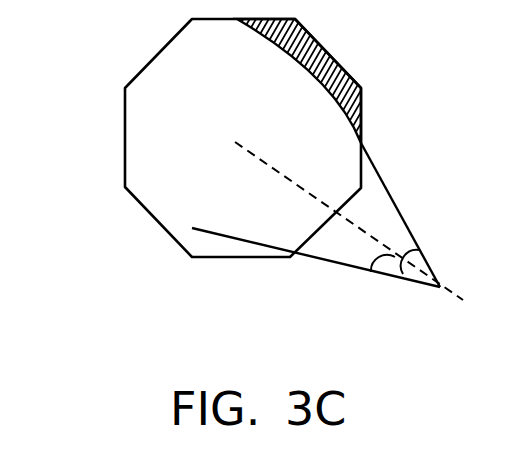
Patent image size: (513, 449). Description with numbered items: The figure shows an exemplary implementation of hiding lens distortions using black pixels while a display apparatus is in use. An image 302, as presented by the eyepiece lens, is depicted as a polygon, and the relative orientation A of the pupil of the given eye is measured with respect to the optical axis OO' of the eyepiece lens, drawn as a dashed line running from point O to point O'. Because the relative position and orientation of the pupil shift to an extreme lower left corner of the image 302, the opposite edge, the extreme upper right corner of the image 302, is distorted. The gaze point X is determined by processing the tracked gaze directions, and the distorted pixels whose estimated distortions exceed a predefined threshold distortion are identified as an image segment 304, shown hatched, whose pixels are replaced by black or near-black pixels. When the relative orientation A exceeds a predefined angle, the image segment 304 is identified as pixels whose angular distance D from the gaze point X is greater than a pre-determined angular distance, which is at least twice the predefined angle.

The image 302 is at (135, 173).
The image segment 304 is at (329, 53).
The gaze point X is at (198, 222).
The optical axis point O is at (338, 210).
The optical axis point O' is at (448, 289).
The relative orientation A is at (371, 268).
The angular distance D is at (402, 275).